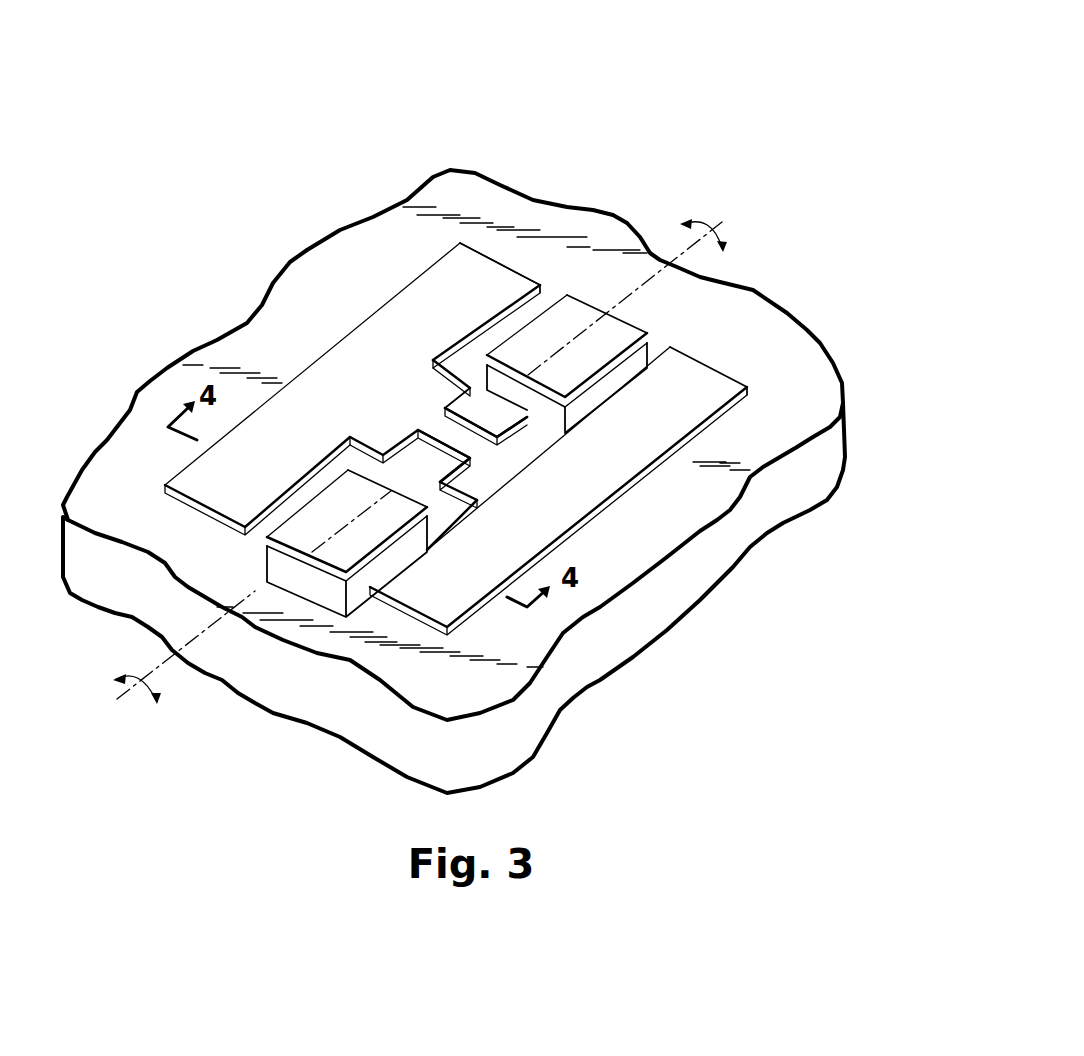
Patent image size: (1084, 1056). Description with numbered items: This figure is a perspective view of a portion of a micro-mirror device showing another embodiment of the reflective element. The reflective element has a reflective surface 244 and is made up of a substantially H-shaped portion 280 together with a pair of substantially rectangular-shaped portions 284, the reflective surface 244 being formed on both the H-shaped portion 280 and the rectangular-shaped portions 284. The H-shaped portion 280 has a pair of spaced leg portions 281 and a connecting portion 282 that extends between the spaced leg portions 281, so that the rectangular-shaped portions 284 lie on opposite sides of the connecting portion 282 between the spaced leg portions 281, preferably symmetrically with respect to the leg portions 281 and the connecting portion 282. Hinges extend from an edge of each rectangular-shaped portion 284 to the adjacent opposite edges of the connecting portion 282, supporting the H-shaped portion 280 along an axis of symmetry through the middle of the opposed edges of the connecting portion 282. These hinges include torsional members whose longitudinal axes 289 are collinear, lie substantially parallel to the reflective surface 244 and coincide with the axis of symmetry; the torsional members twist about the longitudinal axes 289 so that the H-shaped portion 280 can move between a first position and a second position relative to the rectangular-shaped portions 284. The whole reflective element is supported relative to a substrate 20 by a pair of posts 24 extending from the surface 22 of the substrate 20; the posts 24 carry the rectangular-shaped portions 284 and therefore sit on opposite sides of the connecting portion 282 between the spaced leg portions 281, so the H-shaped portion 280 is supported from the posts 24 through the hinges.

The connecting portion 282 is at (432, 363).
The H-shaped portion 280 is at (505, 268).
The rectangular-shaped portions 284 is at (345, 490).
The spaced leg portions 281 is at (352, 352).
The longitudinal axes 289 is at (620, 287).
The reflective surface 244 is at (705, 388).
The surface 22 is at (813, 370).
The substrate 20 is at (827, 450).
The posts 24 is at (310, 590).